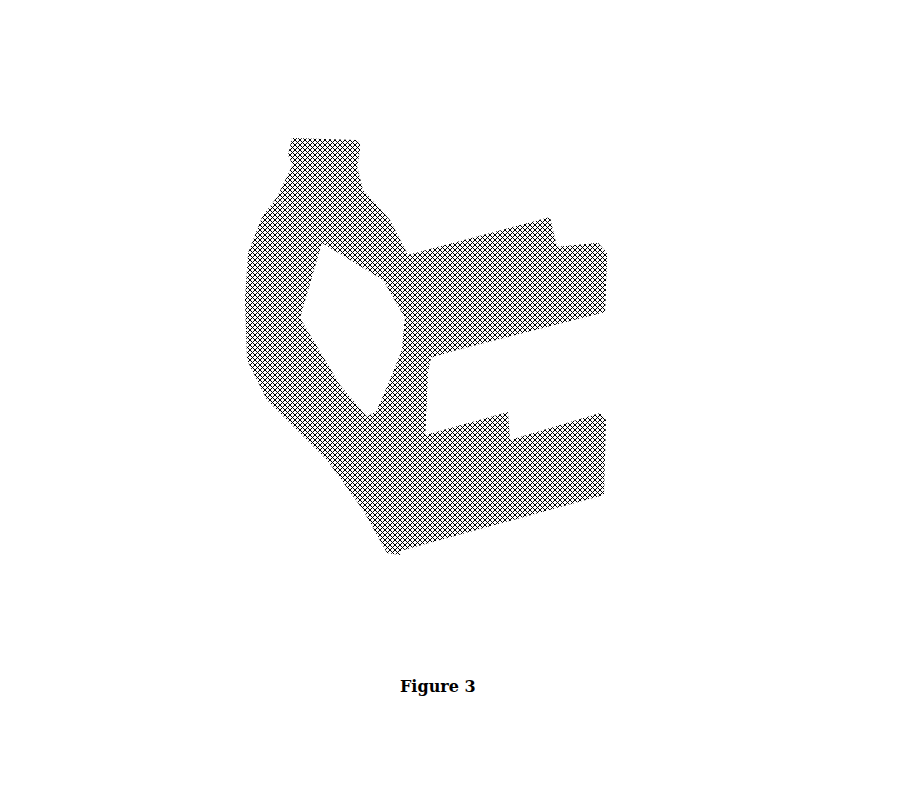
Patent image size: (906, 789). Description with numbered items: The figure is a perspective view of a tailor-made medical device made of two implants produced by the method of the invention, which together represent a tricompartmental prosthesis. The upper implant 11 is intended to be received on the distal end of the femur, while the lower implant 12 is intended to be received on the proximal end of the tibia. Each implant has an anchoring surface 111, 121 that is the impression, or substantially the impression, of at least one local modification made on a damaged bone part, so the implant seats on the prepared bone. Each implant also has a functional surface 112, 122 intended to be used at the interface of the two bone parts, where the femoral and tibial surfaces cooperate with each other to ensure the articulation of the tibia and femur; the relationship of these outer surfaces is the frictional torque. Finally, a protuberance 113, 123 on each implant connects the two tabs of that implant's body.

The implant 11 is at (243, 95).
The anchoring surface 111 is at (535, 229).
The functional surface 112 is at (268, 208).
The protuberance 113 is at (345, 140).
The implant 12 is at (565, 535).
The anchoring surface 121 is at (442, 352).
The functional surface 122 is at (570, 276).
The protuberance 123 is at (420, 388).